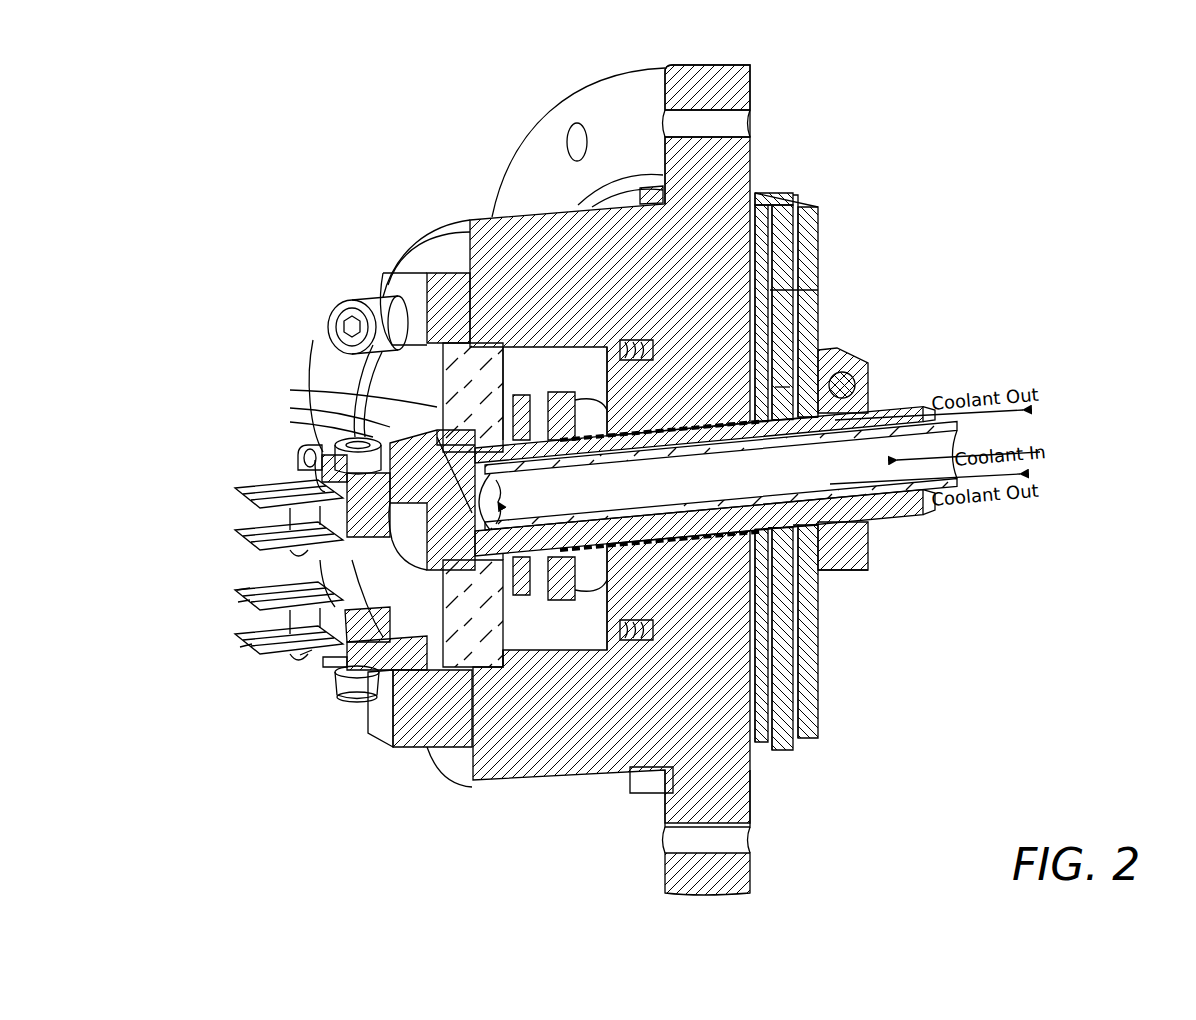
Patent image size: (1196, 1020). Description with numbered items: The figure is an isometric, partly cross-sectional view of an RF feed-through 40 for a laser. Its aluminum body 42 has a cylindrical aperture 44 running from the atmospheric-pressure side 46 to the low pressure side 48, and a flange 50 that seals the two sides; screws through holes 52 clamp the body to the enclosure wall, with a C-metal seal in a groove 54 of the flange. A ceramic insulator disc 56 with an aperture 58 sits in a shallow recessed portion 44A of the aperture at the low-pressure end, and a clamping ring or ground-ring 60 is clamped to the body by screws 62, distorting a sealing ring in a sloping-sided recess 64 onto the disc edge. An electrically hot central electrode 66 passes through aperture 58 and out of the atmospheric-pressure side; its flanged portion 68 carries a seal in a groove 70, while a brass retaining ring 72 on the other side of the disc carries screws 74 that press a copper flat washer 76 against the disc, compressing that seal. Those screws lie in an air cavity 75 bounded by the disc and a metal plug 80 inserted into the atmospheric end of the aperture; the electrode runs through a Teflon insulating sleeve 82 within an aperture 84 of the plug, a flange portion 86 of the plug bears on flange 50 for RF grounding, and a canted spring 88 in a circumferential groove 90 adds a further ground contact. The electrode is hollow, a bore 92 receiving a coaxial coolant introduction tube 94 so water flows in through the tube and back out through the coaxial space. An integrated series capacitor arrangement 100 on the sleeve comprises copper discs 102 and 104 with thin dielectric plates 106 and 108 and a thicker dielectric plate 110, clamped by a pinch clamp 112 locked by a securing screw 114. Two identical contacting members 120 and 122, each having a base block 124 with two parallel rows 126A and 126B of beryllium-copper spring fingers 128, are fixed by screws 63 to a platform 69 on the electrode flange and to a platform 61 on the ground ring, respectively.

The RF feed-through 40 is at (975, 148).
The feed-through body 42 is at (470, 212).
The cylindrical aperture 44 is at (547, 347).
The circumferentially-recessed portion of aperture 44A is at (483, 350).
The atmospheric-pressure side 46 is at (1034, 353).
The low pressure side 48 is at (82, 459).
The flange 50 is at (577, 100).
The holes 52 is at (560, 95).
The groove 54 is at (572, 126).
The ceramic insulator disc 56 is at (455, 440).
The aperture of ceramic disc 58 is at (380, 403).
The clamping ring or ground-ring 60 is at (325, 358).
The platform 61 is at (345, 700).
The screws 62 is at (337, 313).
The screws 63 is at (345, 447).
The sloping-sided recess 64 is at (480, 350).
The central electrode 66 is at (890, 517).
The flanged portion of electrode 68 is at (345, 432).
The platform 69 is at (300, 462).
The groove 70 is at (355, 432).
The retaining ring 72 is at (533, 620).
The screws 74 is at (597, 620).
The air cavity 75 is at (555, 498).
The flat washer 76 is at (513, 620).
The metal plug 80 is at (650, 640).
The Teflon insulating sleeve 82 is at (782, 750).
The aperture in plug 84 is at (805, 738).
The flange portion of plug 86 is at (762, 742).
The canted spring 88 is at (636, 642).
The circumferential groove 90 is at (678, 640).
The bore 92 is at (830, 510).
The coolant introduction tube 94 is at (900, 490).
The integrated series capacitor arrangement 100 is at (797, 200).
The copper disc 102 is at (818, 223).
The copper disc 104 is at (787, 268).
The thin dielectric plate 106 is at (795, 247).
The thin dielectric plate 108 is at (818, 290).
The thicker dielectric plate 110 is at (780, 387).
The pinch clamp 112 is at (867, 577).
The securing screw 114 is at (860, 380).
The contacting member 120 is at (215, 505).
The contacting member 122 is at (213, 628).
The base block 124 is at (373, 630).
The row of spring fingers 126A is at (237, 590).
The row of spring fingers 126B is at (245, 658).
The metal-spring fingers 128 is at (240, 602).